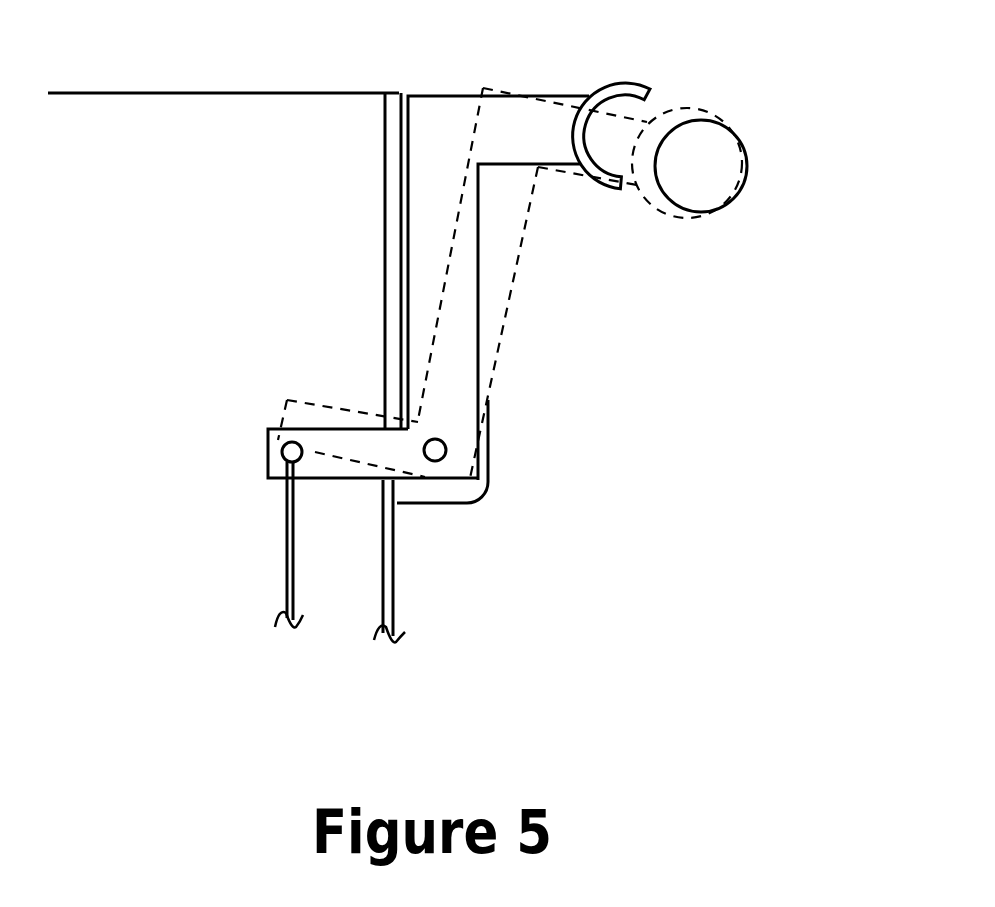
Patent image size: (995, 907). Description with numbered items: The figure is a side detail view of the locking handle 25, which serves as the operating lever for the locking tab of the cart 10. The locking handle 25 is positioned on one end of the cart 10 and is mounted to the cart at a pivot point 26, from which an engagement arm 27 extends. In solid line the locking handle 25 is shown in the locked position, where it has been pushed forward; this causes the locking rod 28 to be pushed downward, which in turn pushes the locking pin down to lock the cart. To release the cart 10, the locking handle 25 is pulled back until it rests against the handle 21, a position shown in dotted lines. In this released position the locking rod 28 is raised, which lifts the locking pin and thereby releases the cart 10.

The cart 10 is at (202, 88).
The handle 21 is at (737, 197).
The locking handle 25 is at (592, 352).
The pivot point 26 is at (440, 461).
The engagement arm 27 is at (337, 483).
The locking rod 28 is at (278, 562).